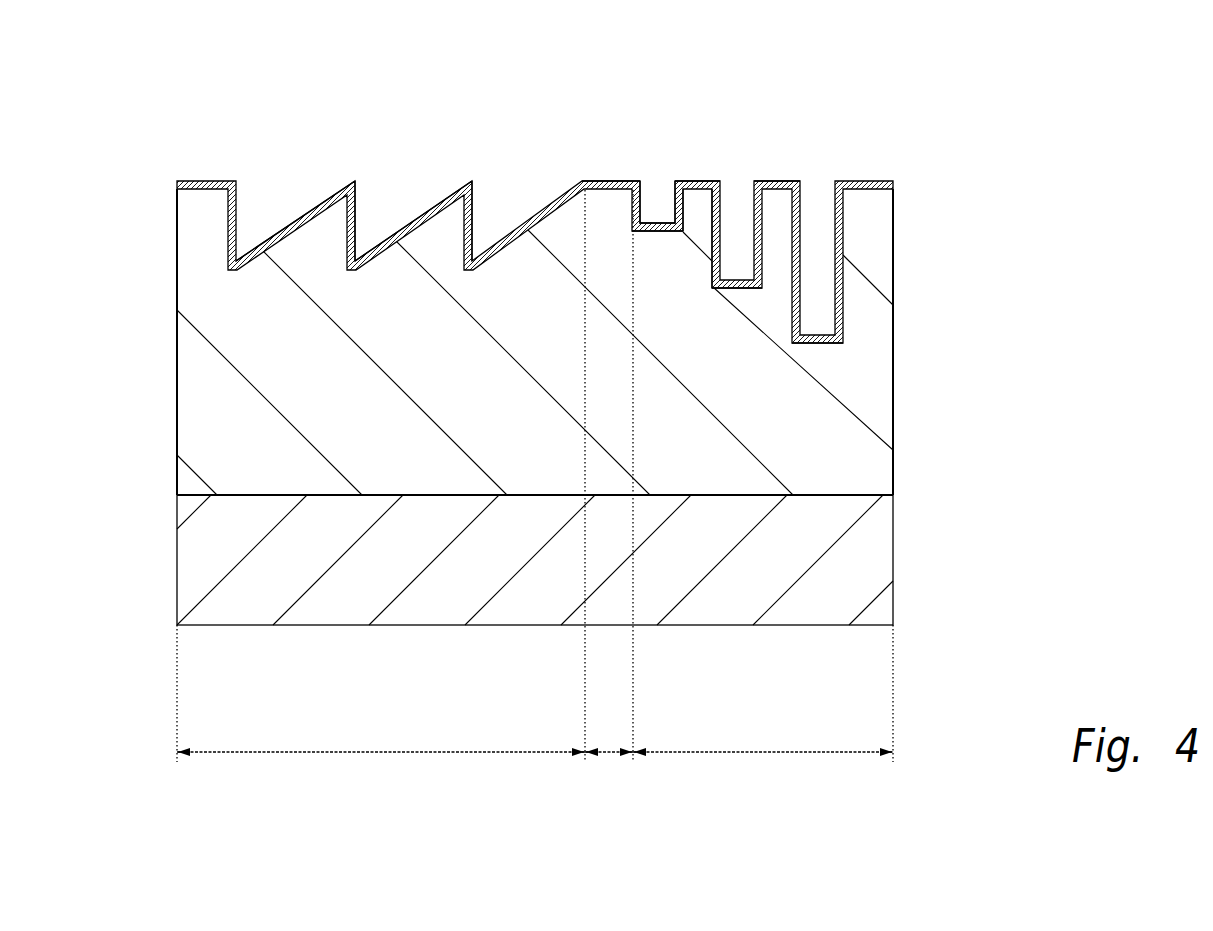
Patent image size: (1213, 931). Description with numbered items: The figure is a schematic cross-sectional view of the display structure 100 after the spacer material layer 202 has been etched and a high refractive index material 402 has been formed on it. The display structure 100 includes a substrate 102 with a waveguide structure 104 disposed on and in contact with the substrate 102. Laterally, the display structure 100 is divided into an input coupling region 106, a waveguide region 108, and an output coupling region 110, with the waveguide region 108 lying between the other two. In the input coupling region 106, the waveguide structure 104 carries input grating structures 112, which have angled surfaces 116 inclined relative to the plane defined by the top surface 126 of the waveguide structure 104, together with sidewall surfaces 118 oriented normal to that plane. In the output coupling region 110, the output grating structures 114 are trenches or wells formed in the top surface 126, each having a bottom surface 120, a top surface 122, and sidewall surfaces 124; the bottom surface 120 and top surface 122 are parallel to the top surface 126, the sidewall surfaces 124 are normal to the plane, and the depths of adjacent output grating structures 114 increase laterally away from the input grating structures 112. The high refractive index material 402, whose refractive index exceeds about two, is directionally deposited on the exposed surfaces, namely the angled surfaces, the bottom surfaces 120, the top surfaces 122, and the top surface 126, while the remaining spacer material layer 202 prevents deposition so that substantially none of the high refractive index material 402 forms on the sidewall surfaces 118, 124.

The display structure 100 is at (115, 73).
The substrate 102 is at (883, 562).
The waveguide structure 104 is at (883, 420).
The input coupling region 106 is at (375, 753).
The waveguide region 108 is at (605, 753).
The output coupling region 110 is at (762, 753).
The input grating structures 112 is at (445, 225).
The output grating structures 114 is at (705, 212).
The angled surfaces 116 is at (323, 200).
The sidewall surfaces 118 is at (368, 200).
The bottom surface 120 is at (651, 222).
The top surface 122 is at (698, 181).
The sidewall surfaces 124 is at (631, 219).
The top surface 126 is at (607, 182).
The spacer material layer 202 is at (478, 205).
The high refractive index material 402 is at (865, 181).